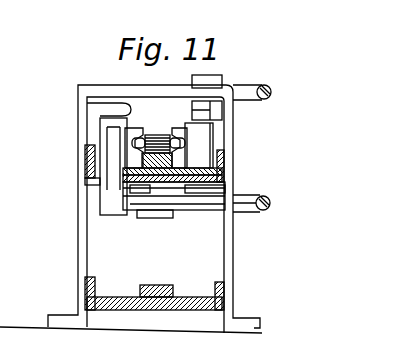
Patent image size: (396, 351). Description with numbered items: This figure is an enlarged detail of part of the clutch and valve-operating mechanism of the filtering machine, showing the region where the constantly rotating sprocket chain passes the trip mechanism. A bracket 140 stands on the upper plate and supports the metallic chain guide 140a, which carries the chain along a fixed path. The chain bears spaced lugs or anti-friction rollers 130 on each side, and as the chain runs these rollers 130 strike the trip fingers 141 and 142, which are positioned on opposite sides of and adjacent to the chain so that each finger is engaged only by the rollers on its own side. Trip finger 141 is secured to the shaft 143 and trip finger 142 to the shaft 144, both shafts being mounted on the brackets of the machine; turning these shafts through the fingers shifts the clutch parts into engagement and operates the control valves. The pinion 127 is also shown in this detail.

The bracket 140 is at (117, 92).
The chain guide 140a is at (184, 213).
The lug or anti-friction roller 130 is at (88, 102).
The trip finger 141 is at (108, 142).
The gear pinion 127 is at (163, 128).
The trip finger 142 is at (213, 78).
The shaft 144 is at (265, 99).
The shaft 143 is at (248, 197).